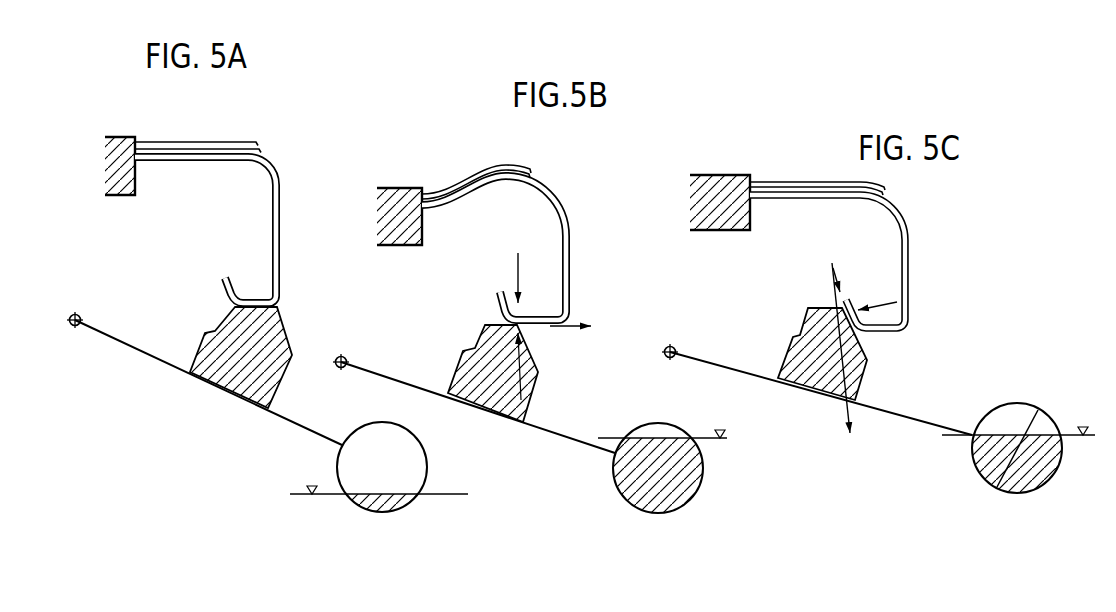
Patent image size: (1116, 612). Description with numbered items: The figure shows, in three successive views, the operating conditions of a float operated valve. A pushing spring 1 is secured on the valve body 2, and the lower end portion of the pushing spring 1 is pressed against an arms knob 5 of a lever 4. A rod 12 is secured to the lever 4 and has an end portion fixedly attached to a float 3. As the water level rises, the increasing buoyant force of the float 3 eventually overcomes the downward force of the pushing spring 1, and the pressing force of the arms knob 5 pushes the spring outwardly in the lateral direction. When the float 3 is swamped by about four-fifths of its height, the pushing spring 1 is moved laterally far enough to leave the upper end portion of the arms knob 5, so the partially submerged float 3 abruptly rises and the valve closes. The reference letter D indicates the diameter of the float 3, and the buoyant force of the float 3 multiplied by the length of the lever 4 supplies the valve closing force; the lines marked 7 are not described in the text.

In FIG. 5A, the pushing spring 1 is at (283, 195).
In FIG. 5B, the pushing spring 1 is at (569, 206).
In FIG. 5C, the pushing spring 1 is at (912, 248).
In FIG. 5A, the valve body 2 is at (107, 200).
In FIG. 5B, the valve body 2 is at (391, 248).
In FIG. 5C, the valve body 2 is at (700, 232).
In FIG. 5A, the float 3 is at (427, 467).
In FIG. 5B, the float 3 is at (703, 472).
In FIG. 5C, the float 3 is at (1052, 418).
In FIG. 5A, the lever 4 is at (209, 337).
In FIG. 5B, the lever 4 is at (473, 350).
In FIG. 5C, the lever 4 is at (802, 356).
In FIG. 5A, the arms knob 5 is at (291, 301).
In FIG. 5B, the arms knob 5 is at (493, 323).
In FIG. 5C, the arms knob 5 is at (823, 308).
In FIG. 5A, the optical fiber bundle 7 is at (239, 141).
In FIG. 5B, the optical fiber bundle 7 is at (498, 172).
In FIG. 5C, the optical fiber bundle 7 is at (813, 182).
In FIG. 5A, the rod 12 is at (275, 418).
In FIG. 5B, the rod 12 is at (543, 430).
In FIG. 5C, the rod 12 is at (906, 420).
In FIG. 5C, the diameter of the float D is at (1017, 442).